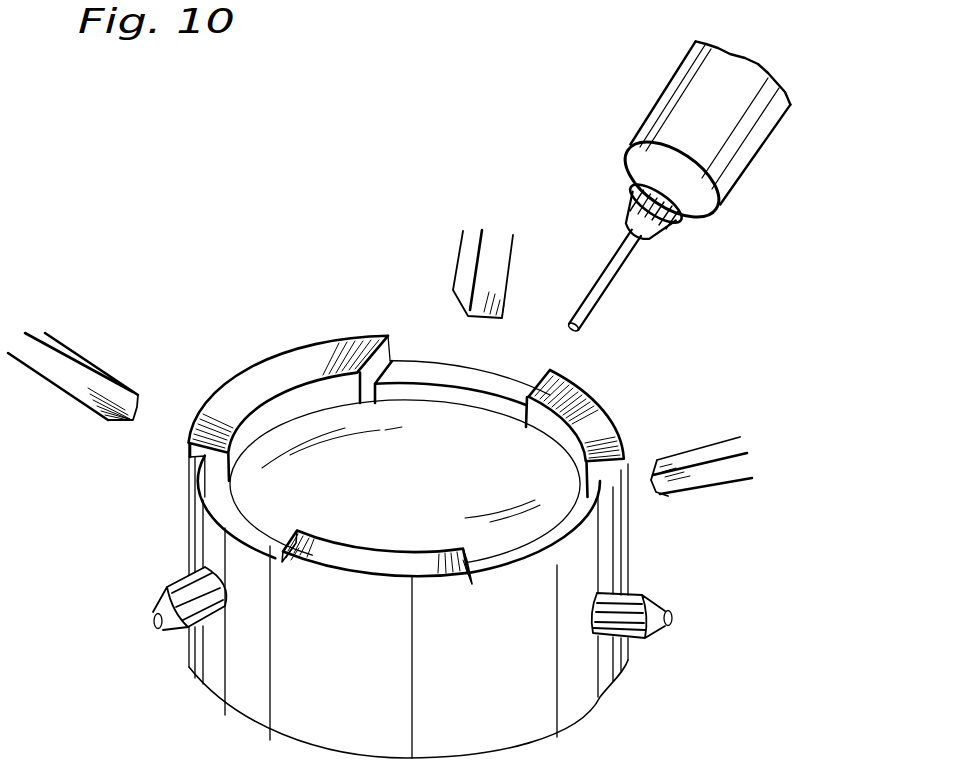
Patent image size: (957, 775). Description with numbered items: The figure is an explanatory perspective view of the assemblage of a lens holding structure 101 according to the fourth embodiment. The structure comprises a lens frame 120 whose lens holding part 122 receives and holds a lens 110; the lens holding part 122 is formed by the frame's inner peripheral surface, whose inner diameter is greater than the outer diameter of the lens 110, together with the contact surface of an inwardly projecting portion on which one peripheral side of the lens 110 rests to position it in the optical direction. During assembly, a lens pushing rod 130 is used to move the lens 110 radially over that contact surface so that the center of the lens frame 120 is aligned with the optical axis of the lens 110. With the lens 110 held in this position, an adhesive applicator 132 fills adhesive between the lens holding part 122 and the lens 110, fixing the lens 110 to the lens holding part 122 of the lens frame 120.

The lens holding structure 101 is at (745, 400).
The lens 110 is at (520, 460).
The lens frame 120 is at (567, 672).
The lens holding part 122 is at (298, 397).
The lens pushing rod 130 is at (755, 540).
The adhesive applicator 132 is at (753, 162).